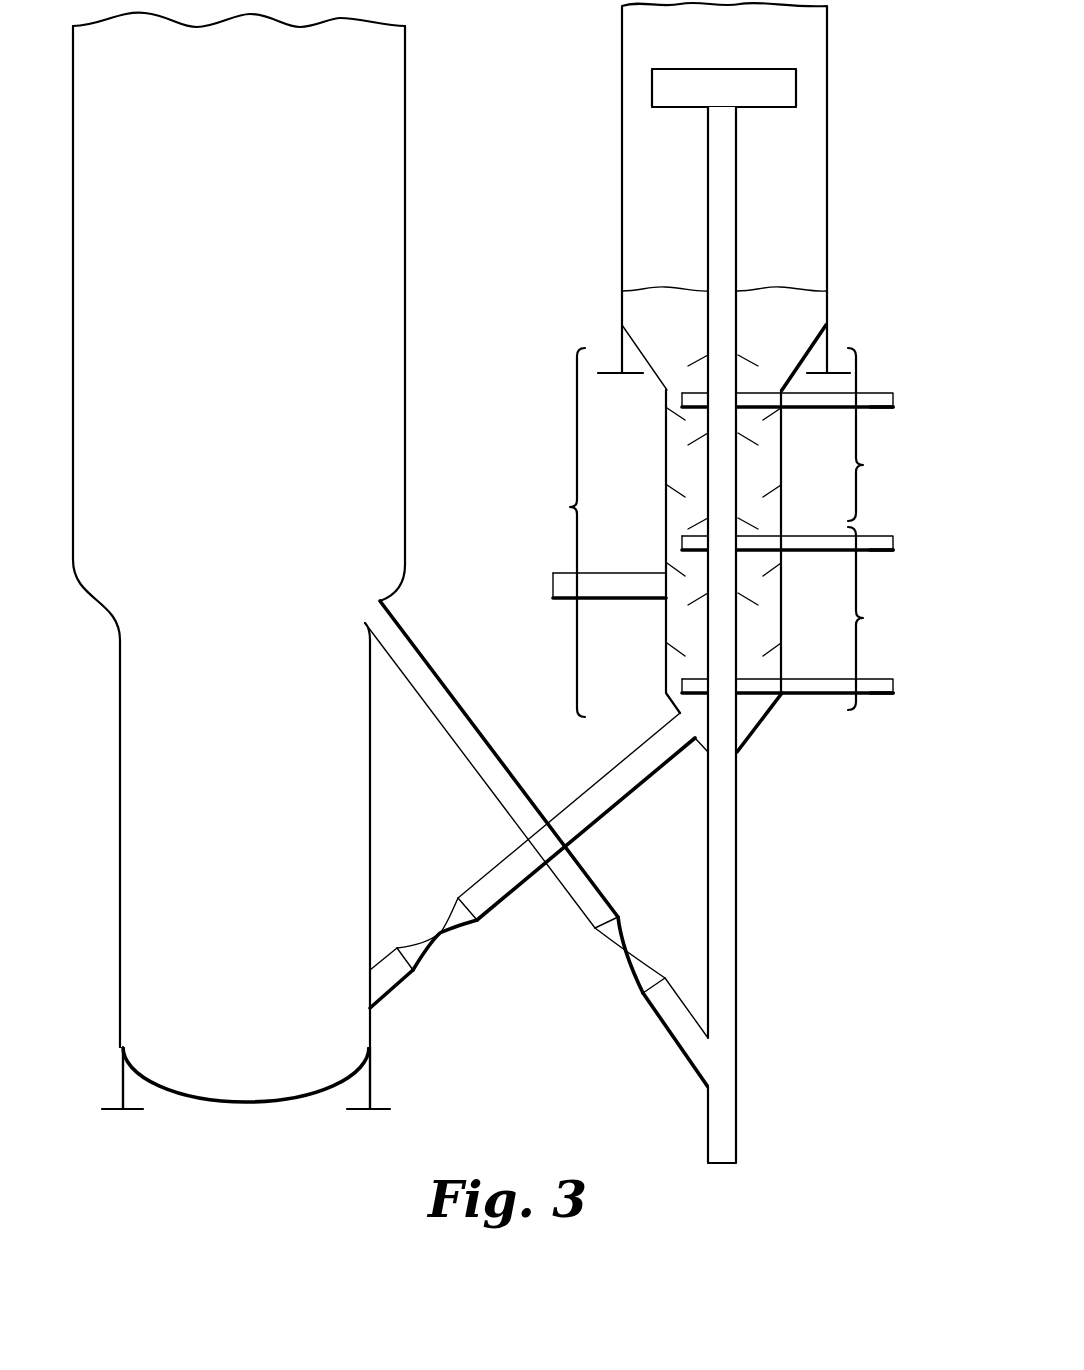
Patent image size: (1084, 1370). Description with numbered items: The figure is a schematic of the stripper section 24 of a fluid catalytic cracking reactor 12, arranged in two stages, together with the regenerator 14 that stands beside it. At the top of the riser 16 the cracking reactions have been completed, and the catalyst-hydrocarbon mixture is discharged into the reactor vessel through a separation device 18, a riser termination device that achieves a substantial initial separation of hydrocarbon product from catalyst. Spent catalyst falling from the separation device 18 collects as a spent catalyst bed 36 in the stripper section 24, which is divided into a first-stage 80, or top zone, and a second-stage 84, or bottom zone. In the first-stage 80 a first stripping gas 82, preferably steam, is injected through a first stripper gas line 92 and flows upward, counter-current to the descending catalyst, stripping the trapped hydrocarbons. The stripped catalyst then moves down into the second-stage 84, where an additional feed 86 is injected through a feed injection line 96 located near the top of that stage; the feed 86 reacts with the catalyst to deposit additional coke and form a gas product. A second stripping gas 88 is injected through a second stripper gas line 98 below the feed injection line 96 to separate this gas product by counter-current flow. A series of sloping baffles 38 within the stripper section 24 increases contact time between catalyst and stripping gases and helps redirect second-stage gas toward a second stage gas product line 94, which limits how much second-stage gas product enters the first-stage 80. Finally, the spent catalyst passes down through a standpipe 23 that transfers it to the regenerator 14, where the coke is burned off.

The reactor 12 is at (828, 160).
The regenerator 14 is at (407, 152).
The riser 16 is at (721, 1164).
The separation device 18 is at (797, 86).
The standpipe 23 is at (603, 813).
The stripper section 24 is at (561, 532).
The spent catalyst bed 36 is at (778, 302).
The sloping baffles 38 is at (668, 410).
The first-stage 80 is at (871, 434).
The first stripping gas 82 is at (894, 401).
The second-stage 84 is at (871, 618).
The additional feed 86 is at (894, 544).
The second stripping gas 88 is at (894, 687).
The first stripper gas line 92 is at (875, 409).
The second stage gas product line 94 is at (553, 586).
The feed injection line 96 is at (875, 552).
The second stripper gas line 98 is at (875, 695).